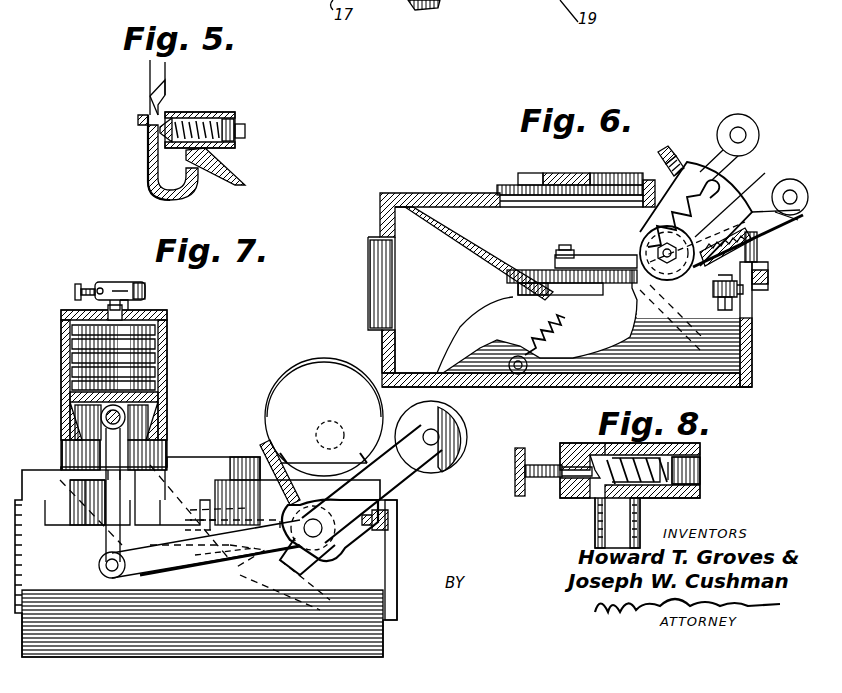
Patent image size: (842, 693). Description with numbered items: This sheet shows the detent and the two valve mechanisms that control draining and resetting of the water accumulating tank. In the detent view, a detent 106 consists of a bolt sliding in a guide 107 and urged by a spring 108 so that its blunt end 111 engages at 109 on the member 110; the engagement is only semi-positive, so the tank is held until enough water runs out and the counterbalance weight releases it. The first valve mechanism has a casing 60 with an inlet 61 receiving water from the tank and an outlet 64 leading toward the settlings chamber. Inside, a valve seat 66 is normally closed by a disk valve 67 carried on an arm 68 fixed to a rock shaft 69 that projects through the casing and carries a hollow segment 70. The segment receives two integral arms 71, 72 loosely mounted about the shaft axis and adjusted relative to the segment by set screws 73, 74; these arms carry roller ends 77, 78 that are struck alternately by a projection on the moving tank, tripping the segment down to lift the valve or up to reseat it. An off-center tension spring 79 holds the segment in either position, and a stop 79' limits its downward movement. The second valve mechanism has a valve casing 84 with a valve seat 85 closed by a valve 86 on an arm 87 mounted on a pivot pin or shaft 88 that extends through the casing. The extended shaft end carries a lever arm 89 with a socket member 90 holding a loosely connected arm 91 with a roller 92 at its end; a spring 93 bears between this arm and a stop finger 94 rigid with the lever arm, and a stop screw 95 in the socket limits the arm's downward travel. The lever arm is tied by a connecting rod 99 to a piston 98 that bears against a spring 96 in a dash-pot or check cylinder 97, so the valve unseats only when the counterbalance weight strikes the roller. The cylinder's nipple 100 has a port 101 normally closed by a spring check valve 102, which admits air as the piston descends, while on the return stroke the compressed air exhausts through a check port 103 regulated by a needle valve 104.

In FIG. 6, the casing 60 is at (445, 165).
In FIG. 6, the inlet 61 is at (372, 258).
In FIG. 6, the outlet 64 is at (752, 308).
In FIG. 6, the valve seat 66 is at (513, 297).
In FIG. 6, the disk valve 67 is at (530, 270).
In FIG. 6, the arm 68 is at (585, 262).
In FIG. 6, the rock shaft 69 is at (778, 176).
In FIG. 6, the segment 70 is at (698, 177).
In FIG. 6, the arm 71 is at (713, 163).
In FIG. 6, the arm 72 is at (757, 250).
In FIG. 6, the set screw 73 is at (662, 150).
In FIG. 6, the set screw 74 is at (768, 282).
In FIG. 6, the roller end 77 is at (740, 114).
In FIG. 6, the roller end 78 is at (790, 224).
In FIG. 6, the tension spring 79 is at (537, 364).
In FIG. 6, the stop 79' is at (702, 292).
In FIG. 7, the valve casing 84 is at (365, 560).
In FIG. 7, the valve seat 85 is at (225, 568).
In FIG. 7, the valve 86 is at (202, 506).
In FIG. 7, the arm 87 is at (330, 435).
In FIG. 7, the pivot pin or shaft 88 is at (318, 545).
In FIG. 7, the lever arm 89 is at (99, 570).
In FIG. 7, the socket member 90 is at (370, 495).
In FIG. 7, the arm 91 is at (410, 460).
In FIG. 7, the roller 92 is at (447, 427).
In FIG. 7, the spring 93 is at (352, 380).
In FIG. 7, the stop finger 94 is at (270, 458).
In FIG. 7, the stop screw 95 is at (398, 520).
In FIG. 7, the spring 96 is at (167, 338).
In FIG. 7, the dash-pot or check cylinder 97 is at (167, 370).
In FIG. 7, the piston 98 is at (167, 405).
In FIG. 7, the connecting rod 99 is at (125, 468).
In FIG. 7, the nipple 100 is at (130, 305).
In FIG. 8, the nipple 100 is at (648, 505).
In FIG. 8, the port 101 is at (705, 478).
In FIG. 8, the spring check valve 102 is at (705, 462).
In FIG. 7, the check port 103 is at (104, 280).
In FIG. 8, the check port 103 is at (592, 443).
In FIG. 7, the needle valve 104 is at (75, 292).
In FIG. 8, the needle valve 104 is at (544, 478).
In FIG. 5, the detent 106 is at (190, 112).
In FIG. 5, the guide 107 is at (214, 112).
In FIG. 5, the spring 108 is at (245, 131).
In FIG. 5, the notch engagement point 109 is at (157, 98).
In FIG. 5, the member 110 is at (150, 78).
In FIG. 5, the blunt end 111 is at (165, 135).